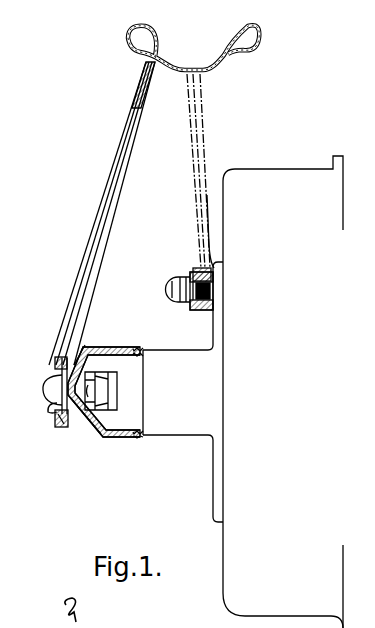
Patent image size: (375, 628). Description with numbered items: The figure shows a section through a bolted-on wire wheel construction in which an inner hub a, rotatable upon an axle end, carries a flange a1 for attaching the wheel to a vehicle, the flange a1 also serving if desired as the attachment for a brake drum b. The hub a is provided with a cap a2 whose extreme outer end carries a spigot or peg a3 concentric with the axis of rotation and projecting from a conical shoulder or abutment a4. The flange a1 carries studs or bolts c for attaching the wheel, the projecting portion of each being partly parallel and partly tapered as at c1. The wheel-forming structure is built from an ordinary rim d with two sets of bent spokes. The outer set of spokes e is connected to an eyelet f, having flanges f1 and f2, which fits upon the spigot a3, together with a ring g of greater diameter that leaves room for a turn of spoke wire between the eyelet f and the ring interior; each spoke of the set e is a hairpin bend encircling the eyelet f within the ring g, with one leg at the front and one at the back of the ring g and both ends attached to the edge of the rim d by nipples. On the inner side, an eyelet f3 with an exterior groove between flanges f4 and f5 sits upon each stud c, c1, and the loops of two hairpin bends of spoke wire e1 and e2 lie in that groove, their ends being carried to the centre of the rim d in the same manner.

The inner hub a is at (173, 428).
The flange a1 is at (214, 508).
The cap a2 is at (99, 436).
The spigot a3 is at (45, 391).
The conical shoulder a4 is at (83, 424).
The brake drum b is at (283, 392).
The stud c is at (170, 287).
The tapered portion c1 is at (210, 292).
The rim d is at (163, 58).
The outer set of spokes e is at (127, 158).
The inner spoke e1 is at (202, 142).
The inner spoke e2 is at (200, 108).
The eyelet f is at (47, 404).
The eyelet flange f1 is at (50, 408).
The eyelet flange f2 is at (83, 346).
The inner eyelet f3 is at (192, 279).
The inner eyelet flange f4 is at (197, 270).
The inner eyelet flange f5 is at (213, 231).
The ring g is at (56, 414).